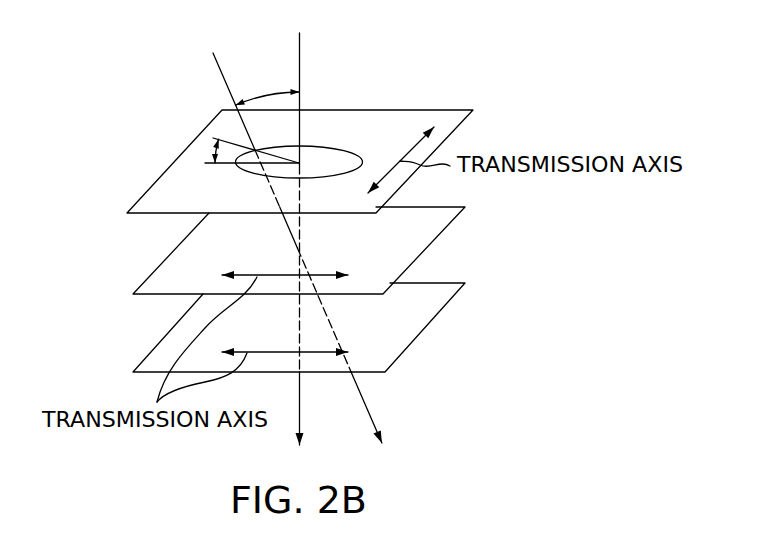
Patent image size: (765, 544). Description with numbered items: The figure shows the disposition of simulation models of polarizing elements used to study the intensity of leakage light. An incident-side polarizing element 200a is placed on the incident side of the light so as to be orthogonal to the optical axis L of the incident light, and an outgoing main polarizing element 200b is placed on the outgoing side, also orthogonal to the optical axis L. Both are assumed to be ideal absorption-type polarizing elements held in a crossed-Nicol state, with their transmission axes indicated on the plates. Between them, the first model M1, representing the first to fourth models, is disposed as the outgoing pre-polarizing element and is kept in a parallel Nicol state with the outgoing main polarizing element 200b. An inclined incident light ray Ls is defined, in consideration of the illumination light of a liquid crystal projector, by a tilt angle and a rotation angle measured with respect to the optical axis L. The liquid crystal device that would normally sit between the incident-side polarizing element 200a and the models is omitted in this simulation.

The incident-side polarizing element 200a is at (176, 160).
The outgoing main polarizing element 200b is at (176, 340).
The first model M1 is at (437, 237).
The optical axis L is at (299, 67).
The incident light beam Ls is at (221, 73).